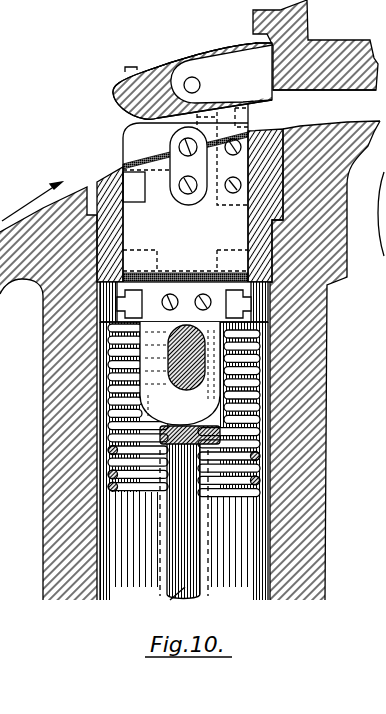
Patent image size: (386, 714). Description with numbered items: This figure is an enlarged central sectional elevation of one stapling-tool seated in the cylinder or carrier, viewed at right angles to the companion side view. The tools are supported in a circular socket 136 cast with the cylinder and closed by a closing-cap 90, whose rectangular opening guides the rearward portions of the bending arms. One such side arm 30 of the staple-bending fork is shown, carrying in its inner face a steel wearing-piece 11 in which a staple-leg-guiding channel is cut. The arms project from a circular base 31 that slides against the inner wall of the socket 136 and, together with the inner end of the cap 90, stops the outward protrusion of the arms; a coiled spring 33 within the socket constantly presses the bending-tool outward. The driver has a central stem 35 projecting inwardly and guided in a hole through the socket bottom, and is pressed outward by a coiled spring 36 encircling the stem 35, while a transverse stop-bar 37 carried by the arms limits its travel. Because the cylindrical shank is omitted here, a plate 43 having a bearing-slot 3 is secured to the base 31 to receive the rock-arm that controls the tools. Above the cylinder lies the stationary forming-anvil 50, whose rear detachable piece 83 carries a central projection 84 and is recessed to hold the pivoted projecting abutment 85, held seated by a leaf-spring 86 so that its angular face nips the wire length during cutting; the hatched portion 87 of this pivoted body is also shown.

The detachable piece 83 is at (341, 57).
The central projection 84 is at (304, 91).
The projecting abutment 85 is at (192, 72).
The leaf-spring 86 is at (207, 50).
The hatched portion of lever arm 87 is at (192, 81).
The forming-anvil 50 is at (177, 136).
The closing-cap 90 is at (103, 177).
The transverse stop-bar 37 is at (134, 187).
The side arm 30 is at (185, 191).
The steel wearing-piece 11 is at (222, 165).
The circular base 31 is at (184, 302).
The bearing-slot 3 is at (184, 319).
The plate 43 is at (180, 373).
The coiled spring 36 is at (180, 450).
The coiled spring 33 is at (239, 487).
The central stem 35 is at (184, 522).
The circular socket 136 is at (305, 495).